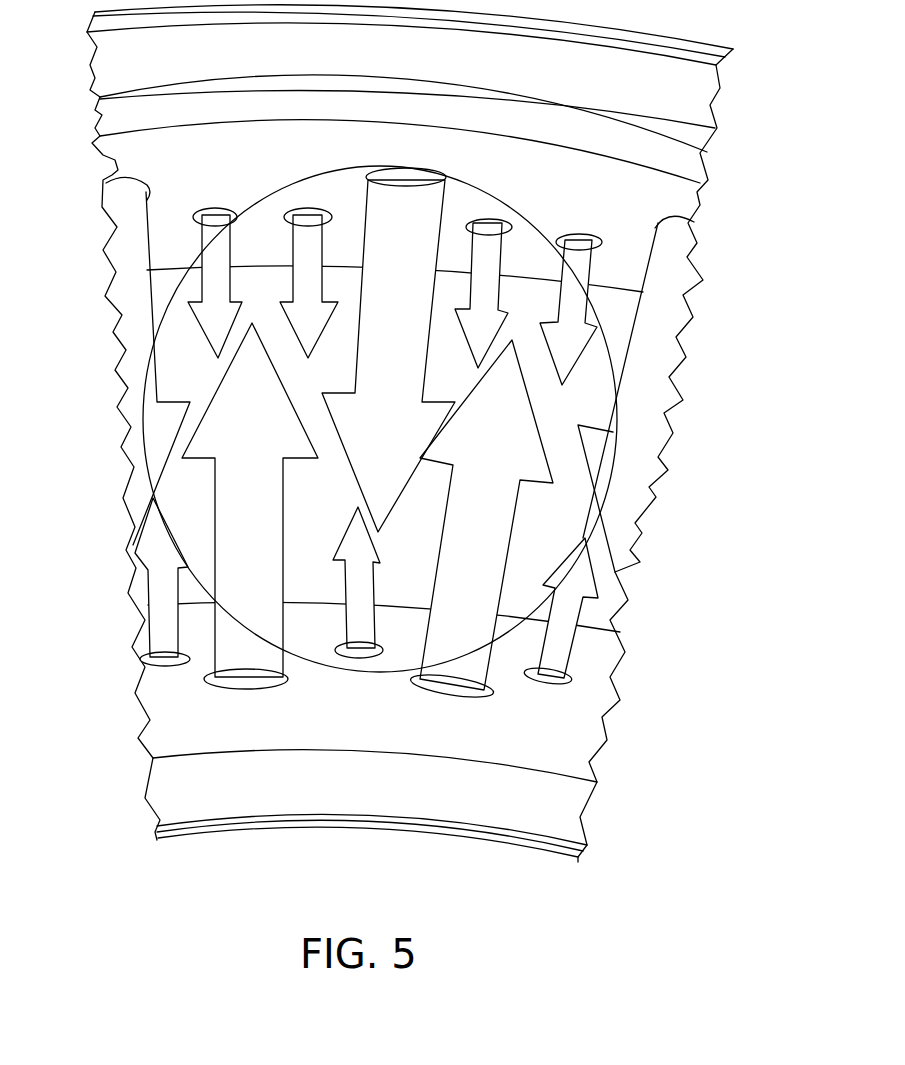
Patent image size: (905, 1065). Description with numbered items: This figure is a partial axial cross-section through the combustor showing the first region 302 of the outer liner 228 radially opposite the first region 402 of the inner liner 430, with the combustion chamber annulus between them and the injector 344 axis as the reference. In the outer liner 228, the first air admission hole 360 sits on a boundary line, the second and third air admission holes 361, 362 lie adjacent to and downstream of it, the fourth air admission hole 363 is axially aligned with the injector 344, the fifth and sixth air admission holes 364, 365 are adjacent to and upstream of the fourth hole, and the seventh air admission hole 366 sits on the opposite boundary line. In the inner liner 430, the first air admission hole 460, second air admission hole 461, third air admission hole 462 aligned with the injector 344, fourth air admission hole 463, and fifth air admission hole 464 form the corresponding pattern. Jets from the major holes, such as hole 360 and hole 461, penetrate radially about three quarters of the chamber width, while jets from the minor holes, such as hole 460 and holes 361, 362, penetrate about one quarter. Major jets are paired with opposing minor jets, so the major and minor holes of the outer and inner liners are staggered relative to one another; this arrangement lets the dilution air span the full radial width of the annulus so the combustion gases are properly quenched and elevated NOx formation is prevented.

The first region of the outer liner 302 is at (257, 130).
The outer liner 228 is at (108, 117).
The first air admission hole 360 is at (115, 160).
The injector 344 is at (263, 204).
The second air admission hole 361 is at (198, 208).
The third air admission hole 362 is at (309, 207).
The fourth air admission hole 363 is at (423, 169).
The fifth air admission hole 364 is at (495, 220).
The sixth air admission hole 365 is at (583, 235).
The seventh air admission hole 366 is at (695, 197).
The inner liner 430 is at (148, 728).
The first air admission hole of the inner liner 460 is at (166, 666).
The second air admission hole of the inner liner 461 is at (263, 690).
The third air admission hole of the inner liner 462 is at (360, 660).
The fourth air admission hole of the inner liner 463 is at (448, 698).
The fifth air admission hole of the inner liner 464 is at (545, 685).
The first region of the inner liner 402 is at (225, 735).